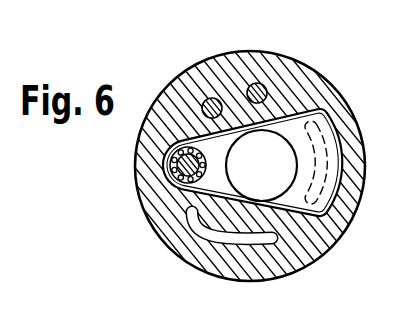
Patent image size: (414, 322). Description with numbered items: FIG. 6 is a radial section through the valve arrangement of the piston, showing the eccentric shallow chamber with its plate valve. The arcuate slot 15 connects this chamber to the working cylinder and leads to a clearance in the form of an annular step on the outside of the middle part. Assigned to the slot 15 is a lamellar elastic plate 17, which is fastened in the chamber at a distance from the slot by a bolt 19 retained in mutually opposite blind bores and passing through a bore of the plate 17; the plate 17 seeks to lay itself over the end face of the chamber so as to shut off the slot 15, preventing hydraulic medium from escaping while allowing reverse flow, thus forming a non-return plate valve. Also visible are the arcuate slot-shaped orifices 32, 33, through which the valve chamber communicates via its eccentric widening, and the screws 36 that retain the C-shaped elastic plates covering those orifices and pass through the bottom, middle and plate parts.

The arcuate slot 15 is at (325, 117).
The lamellar elastic plate 17 is at (208, 186).
The bolt 19 is at (170, 165).
The slot-shaped orifice 32 is at (174, 256).
The slot-shaped orifice 33 is at (218, 237).
The screws 36 is at (251, 85).